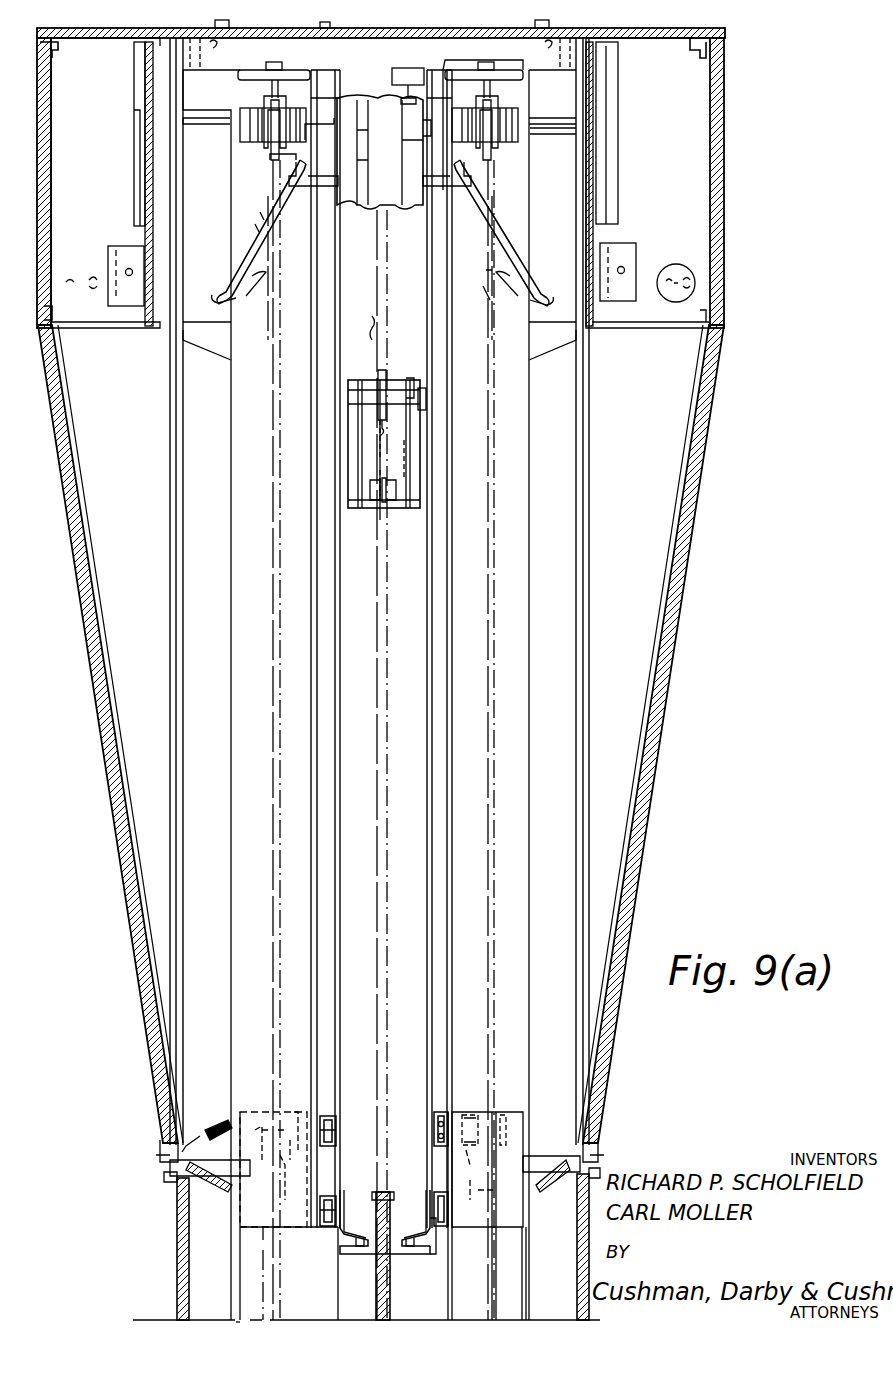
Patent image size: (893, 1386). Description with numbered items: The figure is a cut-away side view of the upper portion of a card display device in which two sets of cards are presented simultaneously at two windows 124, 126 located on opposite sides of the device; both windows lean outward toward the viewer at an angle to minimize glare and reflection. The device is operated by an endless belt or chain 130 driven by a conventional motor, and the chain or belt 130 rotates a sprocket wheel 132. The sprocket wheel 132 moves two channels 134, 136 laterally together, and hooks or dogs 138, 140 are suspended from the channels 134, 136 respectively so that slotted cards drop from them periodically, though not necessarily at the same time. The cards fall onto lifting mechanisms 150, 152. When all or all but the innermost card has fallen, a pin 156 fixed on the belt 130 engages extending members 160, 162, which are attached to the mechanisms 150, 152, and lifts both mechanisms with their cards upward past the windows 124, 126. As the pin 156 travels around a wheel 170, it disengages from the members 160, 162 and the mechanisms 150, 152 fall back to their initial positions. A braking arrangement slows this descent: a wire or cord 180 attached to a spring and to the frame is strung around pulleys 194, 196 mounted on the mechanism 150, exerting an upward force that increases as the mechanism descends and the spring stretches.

The window 124 is at (673, 702).
The window 126 is at (110, 778).
The endless belt or chain 130 is at (380, 770).
The sprocket wheel 132 is at (395, 210).
The channel 134 is at (307, 160).
The channel 136 is at (485, 152).
The hook or dog 138 is at (264, 228).
The hook or dog 140 is at (495, 206).
The lifting mechanism 150 is at (275, 1218).
The lifting mechanism 152 is at (480, 1226).
The pin 156 is at (369, 1239).
The extending member 160 is at (352, 1232).
The extending member 162 is at (408, 1236).
The wheel 170 is at (384, 390).
The wire or cord 180 is at (430, 1011).
The wheel or pulley 194 is at (438, 1114).
The wheel or pulley 196 is at (350, 1188).